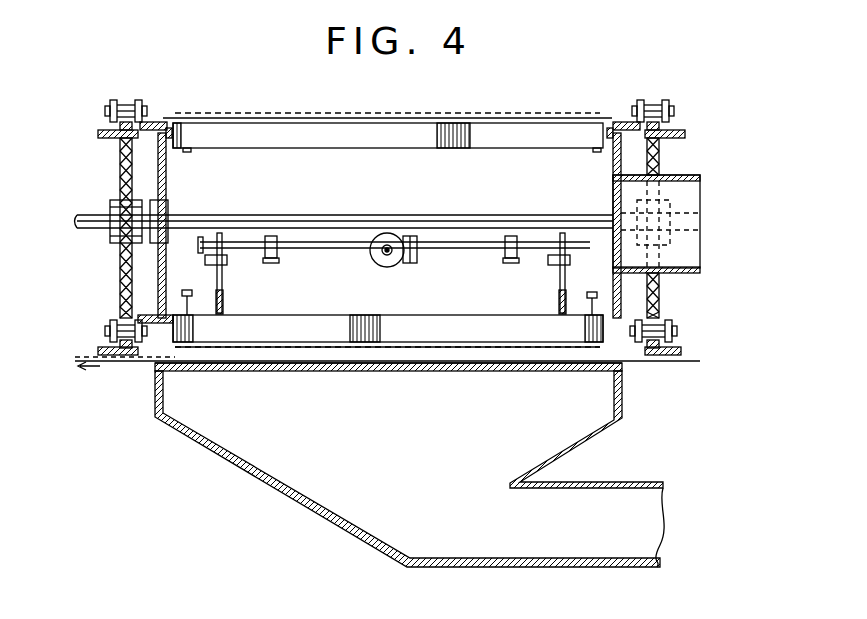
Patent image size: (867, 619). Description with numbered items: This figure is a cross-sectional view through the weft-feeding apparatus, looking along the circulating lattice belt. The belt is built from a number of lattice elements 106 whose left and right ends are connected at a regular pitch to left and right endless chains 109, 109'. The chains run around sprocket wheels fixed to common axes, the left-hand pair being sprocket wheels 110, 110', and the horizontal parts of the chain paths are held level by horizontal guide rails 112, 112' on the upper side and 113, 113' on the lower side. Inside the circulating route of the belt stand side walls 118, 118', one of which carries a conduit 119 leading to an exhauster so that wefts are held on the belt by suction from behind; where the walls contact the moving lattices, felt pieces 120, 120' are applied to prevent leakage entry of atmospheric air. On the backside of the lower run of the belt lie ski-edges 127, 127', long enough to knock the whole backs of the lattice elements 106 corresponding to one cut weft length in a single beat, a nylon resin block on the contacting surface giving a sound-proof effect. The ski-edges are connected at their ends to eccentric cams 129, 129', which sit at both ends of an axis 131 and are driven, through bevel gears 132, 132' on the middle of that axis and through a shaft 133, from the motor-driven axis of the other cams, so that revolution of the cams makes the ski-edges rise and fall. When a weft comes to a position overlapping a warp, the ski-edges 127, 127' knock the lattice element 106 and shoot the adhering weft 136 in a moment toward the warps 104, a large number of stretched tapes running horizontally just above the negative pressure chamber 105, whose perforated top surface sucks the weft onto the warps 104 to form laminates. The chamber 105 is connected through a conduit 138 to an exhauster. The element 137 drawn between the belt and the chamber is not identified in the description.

The warps 104 is at (660, 363).
The negative pressure chamber 105 is at (298, 488).
The lattice elements 106 is at (450, 123).
The left endless chain 109 is at (125, 94).
The right endless chain 109' is at (654, 94).
The sprocket wheel 110 is at (123, 230).
The sprocket wheel 110' is at (684, 228).
The horizontal guide rail 112 is at (93, 120).
The horizontal guide rail 112' is at (689, 120).
The horizontal guide rail 113 is at (102, 336).
The horizontal guide rail 113' is at (683, 337).
The side wall 118 is at (344, 225).
The side wall 118' is at (591, 225).
The conduit 119 is at (700, 210).
The felt pieces 120 is at (175, 151).
The bearing bracket 120' is at (605, 150).
The ski-edge 127 is at (238, 298).
The ski-edge 127' is at (588, 289).
The eccentric cam 129 is at (197, 274).
The eccentric cam 129' is at (582, 274).
The axis 131 is at (312, 250).
The bevel gear 132 is at (430, 261).
The bevel gear 132' is at (372, 264).
The shaft 133 is at (388, 256).
The weft 136 is at (348, 350).
The conveyor plate 137 is at (430, 368).
The conduit 138 is at (663, 530).